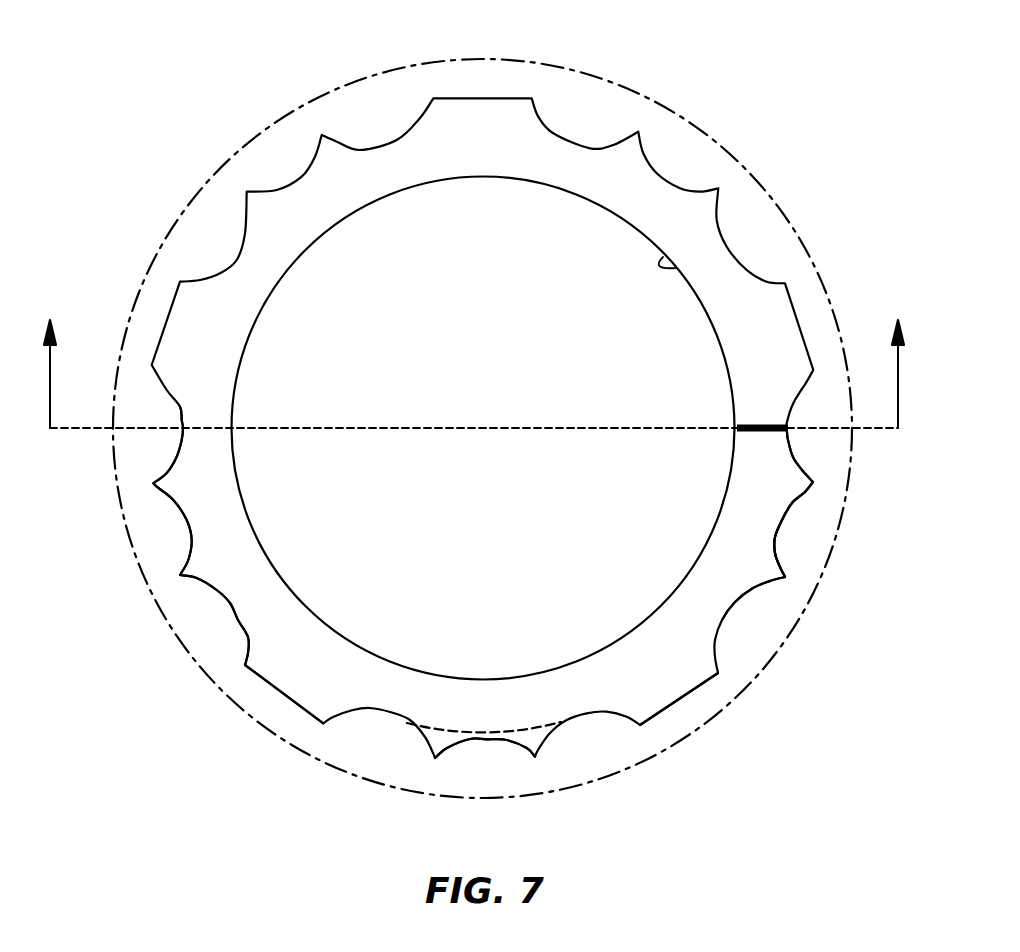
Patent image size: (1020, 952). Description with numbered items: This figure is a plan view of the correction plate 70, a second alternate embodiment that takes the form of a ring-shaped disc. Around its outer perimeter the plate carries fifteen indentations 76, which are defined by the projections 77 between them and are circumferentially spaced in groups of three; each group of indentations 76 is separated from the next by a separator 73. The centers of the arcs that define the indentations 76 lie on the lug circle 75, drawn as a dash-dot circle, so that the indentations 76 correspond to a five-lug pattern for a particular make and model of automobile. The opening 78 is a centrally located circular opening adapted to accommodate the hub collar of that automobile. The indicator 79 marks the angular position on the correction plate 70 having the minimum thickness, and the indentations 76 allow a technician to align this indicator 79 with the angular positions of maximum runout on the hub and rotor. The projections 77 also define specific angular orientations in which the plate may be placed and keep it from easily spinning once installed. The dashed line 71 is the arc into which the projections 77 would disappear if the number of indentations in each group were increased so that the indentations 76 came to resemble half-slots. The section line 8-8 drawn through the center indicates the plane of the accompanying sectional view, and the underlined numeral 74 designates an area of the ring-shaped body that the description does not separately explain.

The correction plate 70 is at (720, 113).
The dashed line 71 is at (450, 727).
The separator 73 is at (277, 692).
The inner bore 74 is at (312, 670).
The lug circle 75 is at (220, 168).
The indentations 76 is at (182, 408).
The projections 77 is at (813, 483).
The opening 78 is at (663, 257).
The indicator 79 is at (757, 422).
The section line 8- 8 is at (473, 387).